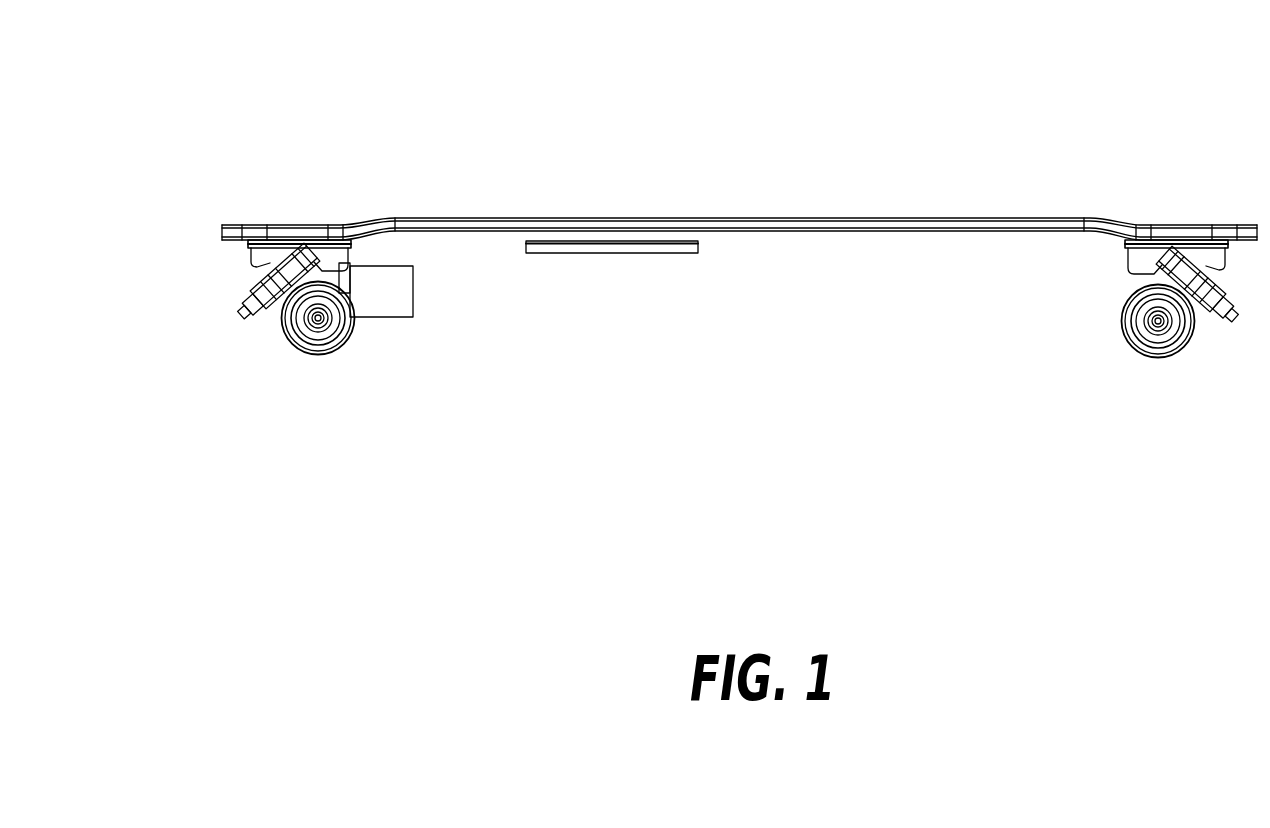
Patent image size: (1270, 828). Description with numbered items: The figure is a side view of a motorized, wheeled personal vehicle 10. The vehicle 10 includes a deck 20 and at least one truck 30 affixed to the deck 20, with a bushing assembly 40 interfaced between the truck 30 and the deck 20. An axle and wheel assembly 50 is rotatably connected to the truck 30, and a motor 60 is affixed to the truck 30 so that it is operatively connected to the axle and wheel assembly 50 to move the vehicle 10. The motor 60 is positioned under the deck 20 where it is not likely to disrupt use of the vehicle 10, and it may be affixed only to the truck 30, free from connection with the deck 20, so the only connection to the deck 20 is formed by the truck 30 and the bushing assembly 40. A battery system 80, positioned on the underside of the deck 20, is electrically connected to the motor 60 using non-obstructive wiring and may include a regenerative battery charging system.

The motorized, wheeled personal vehicle 10 is at (900, 155).
The deck 20 is at (660, 222).
The truck 30 is at (280, 265).
The bushing assembly 40 is at (1200, 305).
The axle and wheel assembly 50 is at (300, 345).
The motor 60 is at (382, 295).
The battery system 80 is at (623, 253).